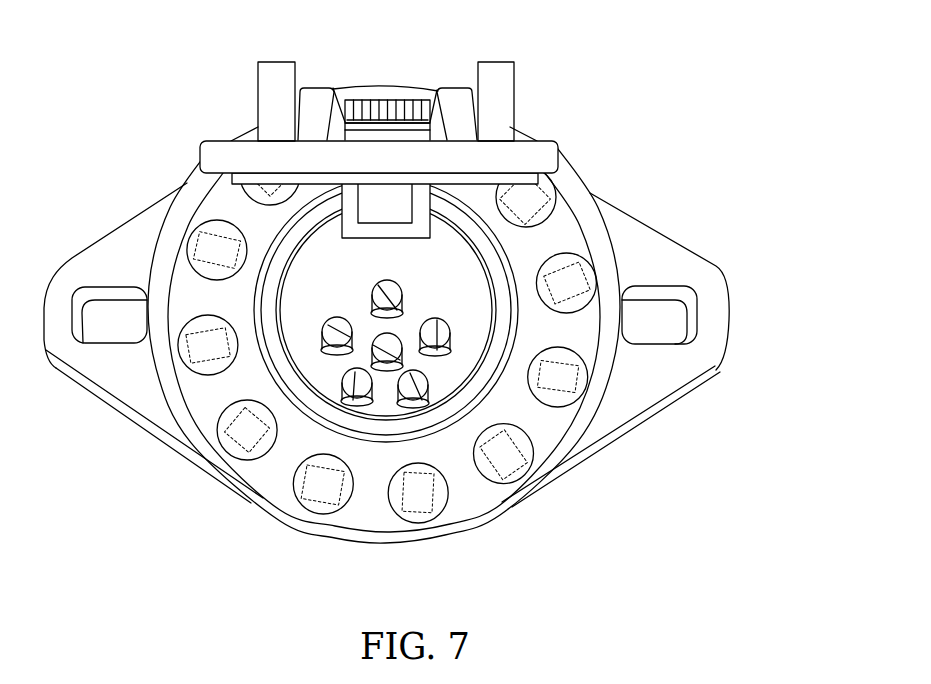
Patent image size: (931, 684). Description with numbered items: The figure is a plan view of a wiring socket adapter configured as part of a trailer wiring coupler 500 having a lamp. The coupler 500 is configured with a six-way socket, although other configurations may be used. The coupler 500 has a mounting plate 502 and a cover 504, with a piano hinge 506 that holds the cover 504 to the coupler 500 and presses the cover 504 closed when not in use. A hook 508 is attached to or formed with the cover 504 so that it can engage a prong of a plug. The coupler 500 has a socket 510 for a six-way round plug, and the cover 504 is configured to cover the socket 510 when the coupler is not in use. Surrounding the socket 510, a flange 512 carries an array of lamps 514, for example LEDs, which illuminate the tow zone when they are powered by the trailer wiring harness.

The coupler 500 is at (413, 310).
The mounting plate 502 is at (653, 230).
The cover 504 is at (543, 152).
The piano hinge 506 is at (407, 113).
The hook 508 is at (352, 222).
The socket 510 is at (307, 347).
The flange 512 is at (273, 460).
The lamps 514 is at (557, 380).